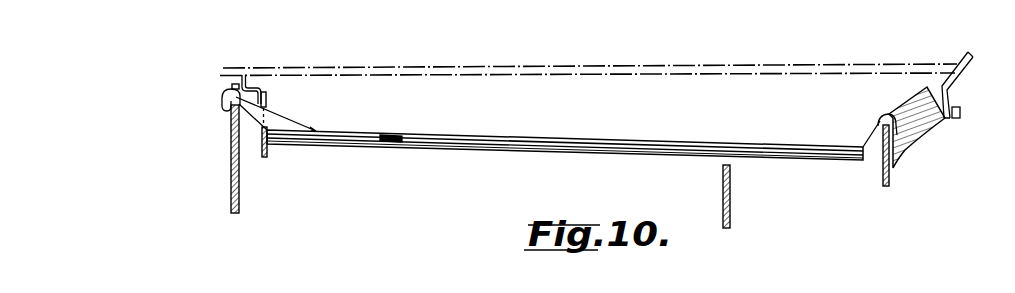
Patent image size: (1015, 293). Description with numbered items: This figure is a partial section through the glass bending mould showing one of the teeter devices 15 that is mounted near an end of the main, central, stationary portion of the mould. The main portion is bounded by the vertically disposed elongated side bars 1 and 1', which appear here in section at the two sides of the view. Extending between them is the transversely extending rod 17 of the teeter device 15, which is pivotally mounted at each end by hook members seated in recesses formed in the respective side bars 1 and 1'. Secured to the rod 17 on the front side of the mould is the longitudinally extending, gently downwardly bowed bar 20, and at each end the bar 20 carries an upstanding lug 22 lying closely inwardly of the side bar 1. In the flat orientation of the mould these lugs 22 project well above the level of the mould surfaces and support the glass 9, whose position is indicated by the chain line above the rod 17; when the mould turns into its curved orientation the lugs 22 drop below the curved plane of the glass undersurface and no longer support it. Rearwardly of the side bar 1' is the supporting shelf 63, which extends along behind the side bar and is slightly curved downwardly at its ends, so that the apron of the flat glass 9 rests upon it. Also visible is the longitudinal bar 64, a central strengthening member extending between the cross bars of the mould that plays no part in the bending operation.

The glass 9 is at (601, 67).
The rod 17 is at (588, 144).
The teeter device 15 is at (536, 158).
The side bar 1 is at (223, 159).
The side bar 1' is at (873, 160).
The longitudinal bar 64 is at (731, 199).
The lug 22 is at (250, 75).
The bar 20 is at (267, 99).
The supporting shelf 63 is at (973, 62).